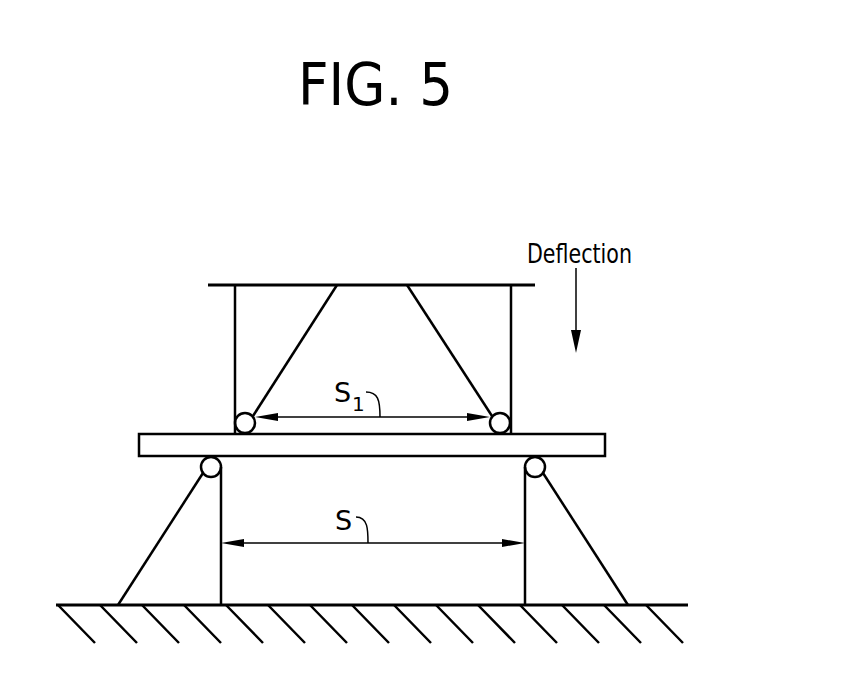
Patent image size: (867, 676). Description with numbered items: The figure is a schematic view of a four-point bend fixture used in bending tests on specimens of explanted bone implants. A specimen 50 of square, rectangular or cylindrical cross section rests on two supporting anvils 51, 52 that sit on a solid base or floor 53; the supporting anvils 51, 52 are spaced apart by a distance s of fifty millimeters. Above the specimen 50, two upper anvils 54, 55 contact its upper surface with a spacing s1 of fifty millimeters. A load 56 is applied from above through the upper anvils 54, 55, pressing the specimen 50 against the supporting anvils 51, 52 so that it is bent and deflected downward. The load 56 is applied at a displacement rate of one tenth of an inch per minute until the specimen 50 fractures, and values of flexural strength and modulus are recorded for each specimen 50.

The specimen 50 is at (605, 446).
The supporting anvil 51 is at (195, 572).
The supporting anvil 52 is at (570, 572).
The solid base or floor 53 is at (667, 620).
The upper anvil 54 is at (279, 350).
The upper anvil 55 is at (490, 340).
The load 56 is at (372, 265).